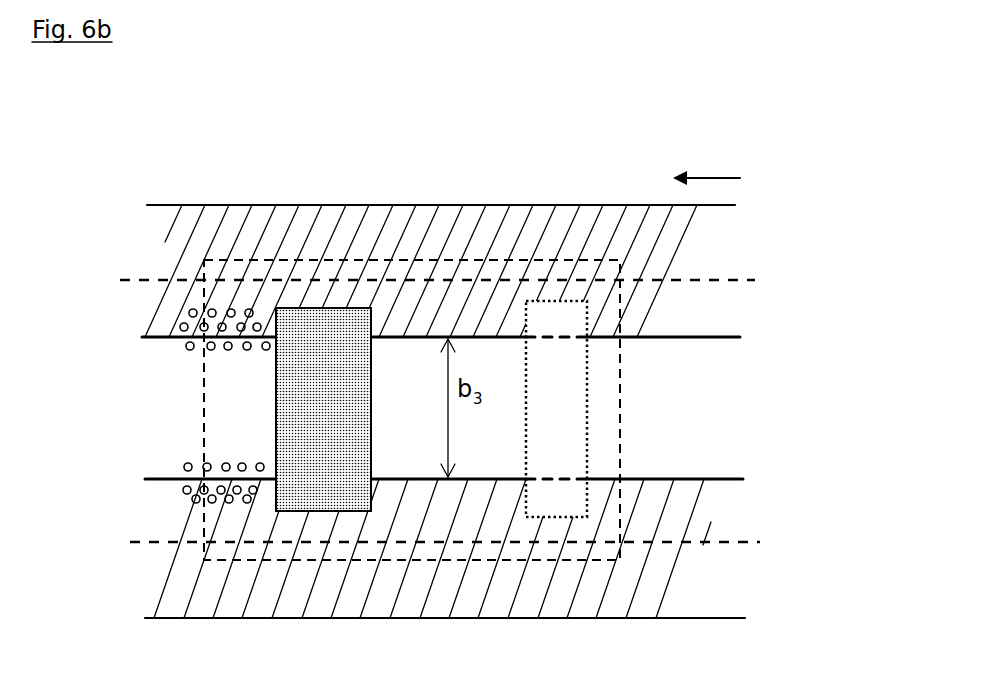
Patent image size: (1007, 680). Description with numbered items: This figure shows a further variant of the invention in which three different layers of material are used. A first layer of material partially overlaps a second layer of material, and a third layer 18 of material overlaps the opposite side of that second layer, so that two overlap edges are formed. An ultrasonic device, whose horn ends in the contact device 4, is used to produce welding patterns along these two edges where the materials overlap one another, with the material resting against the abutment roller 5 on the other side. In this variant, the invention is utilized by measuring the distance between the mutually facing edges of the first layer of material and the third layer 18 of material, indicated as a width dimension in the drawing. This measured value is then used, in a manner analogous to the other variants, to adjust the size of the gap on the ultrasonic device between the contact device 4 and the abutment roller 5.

The third layer of material 18 is at (187, 587).
The contact device 4 is at (323, 487).
The abutment roller 5 is at (593, 550).